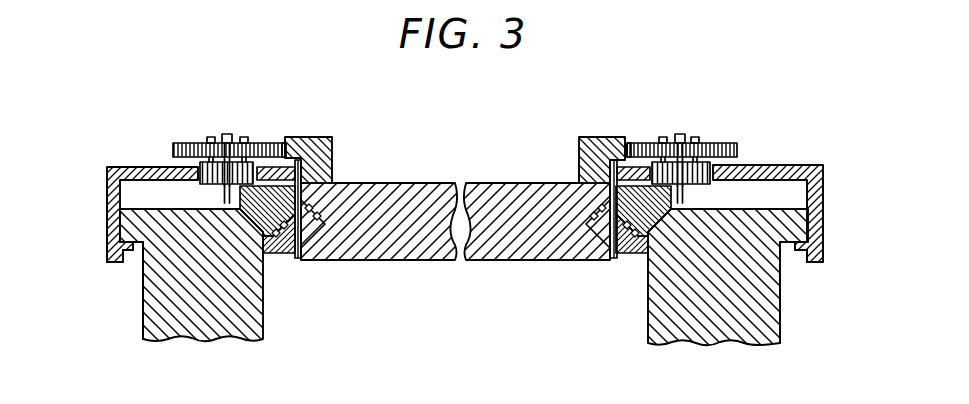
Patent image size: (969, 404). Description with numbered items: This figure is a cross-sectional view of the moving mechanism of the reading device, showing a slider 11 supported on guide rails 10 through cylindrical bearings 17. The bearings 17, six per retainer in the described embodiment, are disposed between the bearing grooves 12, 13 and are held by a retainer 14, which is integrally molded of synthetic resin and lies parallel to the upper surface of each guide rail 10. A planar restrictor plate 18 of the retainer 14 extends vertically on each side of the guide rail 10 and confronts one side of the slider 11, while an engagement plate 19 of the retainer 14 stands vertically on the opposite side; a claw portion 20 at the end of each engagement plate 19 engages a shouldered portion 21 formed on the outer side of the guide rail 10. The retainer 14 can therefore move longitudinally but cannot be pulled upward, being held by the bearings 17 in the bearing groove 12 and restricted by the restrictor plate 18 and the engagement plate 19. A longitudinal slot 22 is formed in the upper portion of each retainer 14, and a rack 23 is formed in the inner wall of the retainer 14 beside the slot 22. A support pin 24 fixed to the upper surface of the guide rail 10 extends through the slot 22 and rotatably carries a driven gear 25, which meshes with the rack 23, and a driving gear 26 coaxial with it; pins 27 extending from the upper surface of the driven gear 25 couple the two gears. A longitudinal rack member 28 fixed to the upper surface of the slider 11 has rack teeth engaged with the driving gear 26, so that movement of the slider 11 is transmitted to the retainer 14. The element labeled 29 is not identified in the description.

The guide rail 10 is at (261, 325).
The slider 11 is at (443, 182).
The bearing groove 12 is at (266, 222).
The bearing groove 13 is at (312, 227).
The retainer 14 is at (130, 167).
The cylindrical bearings 17 is at (306, 200).
The restrictor plate 18 is at (300, 257).
The engagement plate 19 is at (108, 186).
The claw portion 20 is at (122, 257).
The shouldered portion 21 is at (141, 243).
The longitudinal slot 22 is at (200, 183).
The rack 23 is at (295, 160).
The support pin 24 is at (224, 135).
The driven gear 25 is at (210, 186).
The driving gear 26 is at (266, 143).
The pins 27 is at (208, 141).
The rack member 28 is at (329, 158).
The washer 29 is at (287, 142).